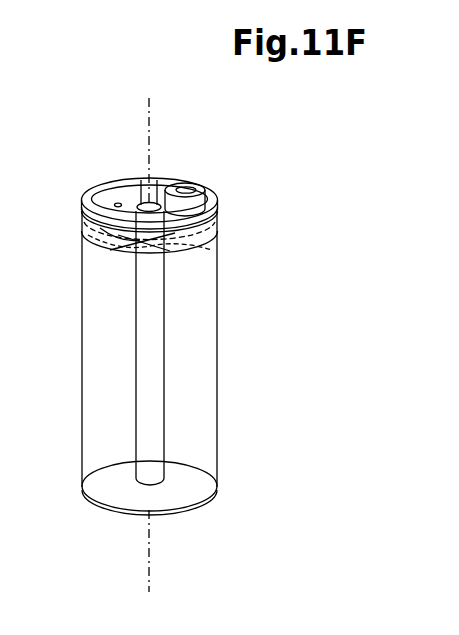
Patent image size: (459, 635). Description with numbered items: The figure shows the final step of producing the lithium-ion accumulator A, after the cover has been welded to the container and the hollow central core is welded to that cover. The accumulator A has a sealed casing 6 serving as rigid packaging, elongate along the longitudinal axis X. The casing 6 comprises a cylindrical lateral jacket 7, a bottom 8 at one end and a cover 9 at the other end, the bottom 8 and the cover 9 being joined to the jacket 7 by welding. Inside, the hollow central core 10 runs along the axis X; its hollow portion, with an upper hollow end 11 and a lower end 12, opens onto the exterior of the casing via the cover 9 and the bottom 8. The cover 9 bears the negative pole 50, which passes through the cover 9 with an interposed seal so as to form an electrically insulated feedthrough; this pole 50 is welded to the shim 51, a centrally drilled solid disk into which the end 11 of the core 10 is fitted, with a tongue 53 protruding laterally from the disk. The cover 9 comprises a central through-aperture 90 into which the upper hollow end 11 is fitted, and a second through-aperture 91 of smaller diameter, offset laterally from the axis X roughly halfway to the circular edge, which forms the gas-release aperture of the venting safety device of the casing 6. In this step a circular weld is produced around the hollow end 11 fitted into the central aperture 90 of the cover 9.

The sealed casing 6 is at (92, 310).
The cylindrical lateral jacket 7 is at (203, 322).
The bottom 8 is at (195, 475).
The cover 9 is at (84, 182).
The hollow central core 10 is at (152, 382).
The upper hollow end of the core 11 is at (141, 180).
The hollow portion end 12 is at (157, 472).
The negative pole 50 is at (201, 183).
The shim 51 is at (218, 245).
The tongue 53 is at (142, 238).
The central through-aperture 90 is at (157, 180).
The through-aperture 91 is at (118, 203).
The lithium-ion accumulator A is at (262, 360).
The longitudinal axis X is at (146, 331).